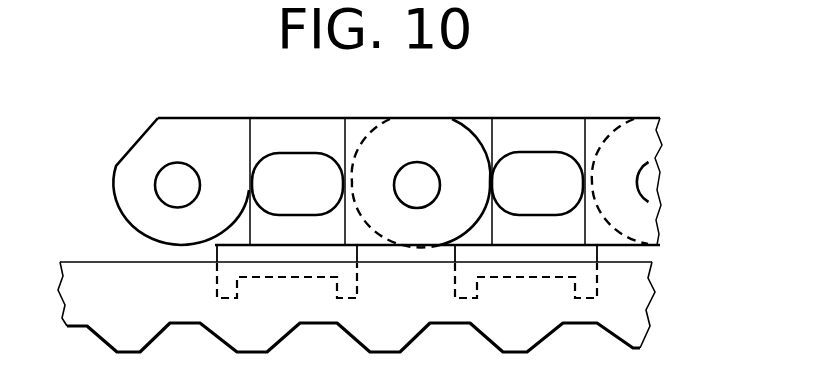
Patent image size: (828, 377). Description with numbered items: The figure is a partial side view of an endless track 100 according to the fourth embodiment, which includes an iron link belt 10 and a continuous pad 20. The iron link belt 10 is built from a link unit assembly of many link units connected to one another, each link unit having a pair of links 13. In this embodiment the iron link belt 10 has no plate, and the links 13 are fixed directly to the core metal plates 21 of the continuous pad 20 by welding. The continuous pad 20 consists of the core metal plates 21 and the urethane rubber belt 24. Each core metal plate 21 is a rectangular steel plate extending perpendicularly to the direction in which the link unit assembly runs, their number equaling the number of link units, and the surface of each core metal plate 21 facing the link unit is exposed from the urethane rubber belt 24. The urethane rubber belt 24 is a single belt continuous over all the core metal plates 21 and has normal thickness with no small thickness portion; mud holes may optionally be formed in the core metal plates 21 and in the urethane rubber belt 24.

The iron link belt 10 is at (522, 133).
The link 13 is at (141, 159).
The endless track 100 is at (592, 104).
The continuous pad 20 is at (628, 312).
The core metal plate 21 is at (232, 254).
The urethane rubber belt 24 is at (627, 283).